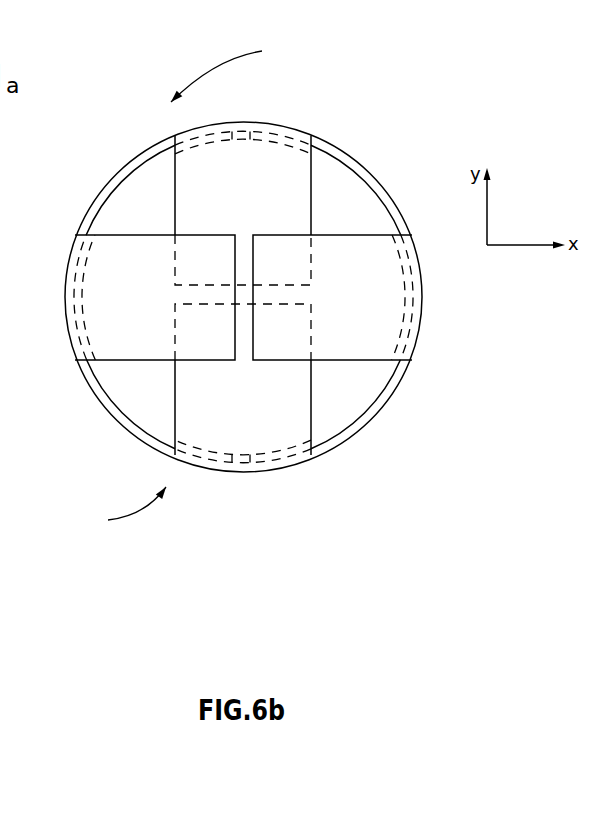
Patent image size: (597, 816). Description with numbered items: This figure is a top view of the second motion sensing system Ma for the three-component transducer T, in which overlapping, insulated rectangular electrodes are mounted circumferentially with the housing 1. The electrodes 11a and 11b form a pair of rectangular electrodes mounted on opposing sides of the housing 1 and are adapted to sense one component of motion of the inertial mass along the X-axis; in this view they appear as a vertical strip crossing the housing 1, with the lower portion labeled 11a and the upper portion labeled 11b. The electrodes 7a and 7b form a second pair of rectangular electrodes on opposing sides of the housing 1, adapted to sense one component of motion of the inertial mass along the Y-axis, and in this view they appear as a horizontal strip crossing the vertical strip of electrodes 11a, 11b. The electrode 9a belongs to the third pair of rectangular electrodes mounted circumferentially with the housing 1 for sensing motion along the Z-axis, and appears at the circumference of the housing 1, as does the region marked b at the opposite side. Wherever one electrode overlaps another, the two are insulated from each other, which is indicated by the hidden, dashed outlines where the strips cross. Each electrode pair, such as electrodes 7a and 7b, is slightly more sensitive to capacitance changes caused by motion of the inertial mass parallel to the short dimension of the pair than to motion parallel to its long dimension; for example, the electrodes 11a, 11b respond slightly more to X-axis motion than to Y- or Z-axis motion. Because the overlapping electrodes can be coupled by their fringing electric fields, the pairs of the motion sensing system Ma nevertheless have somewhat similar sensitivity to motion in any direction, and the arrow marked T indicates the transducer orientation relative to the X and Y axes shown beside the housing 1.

The housing 1 is at (158, 188).
The electrode 7a is at (118, 235).
The electrode 7b is at (365, 235).
The electrode 9a is at (107, 395).
The electrode 11a is at (313, 417).
The electrode 11b is at (312, 188).
The edge region b is at (380, 398).
The second three-component motion sensing system Ma is at (239, 65).
The three-component transducer T is at (126, 508).